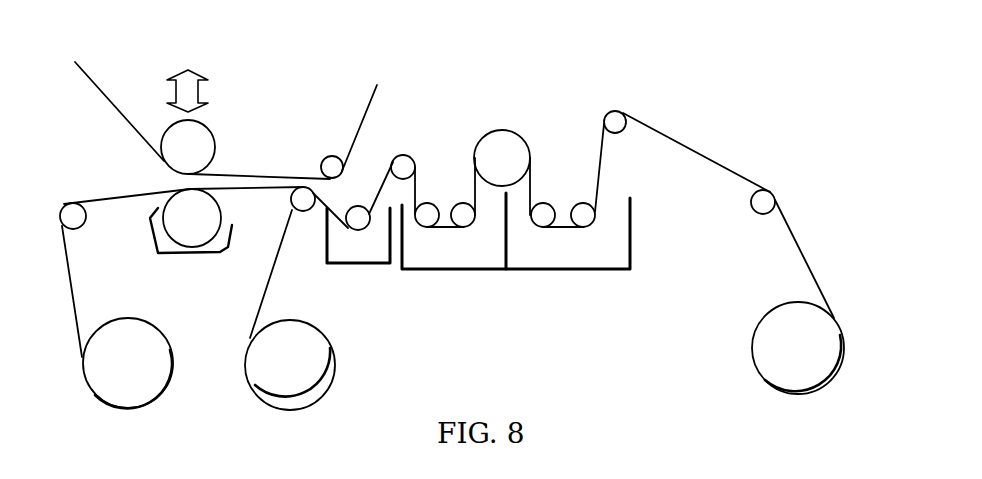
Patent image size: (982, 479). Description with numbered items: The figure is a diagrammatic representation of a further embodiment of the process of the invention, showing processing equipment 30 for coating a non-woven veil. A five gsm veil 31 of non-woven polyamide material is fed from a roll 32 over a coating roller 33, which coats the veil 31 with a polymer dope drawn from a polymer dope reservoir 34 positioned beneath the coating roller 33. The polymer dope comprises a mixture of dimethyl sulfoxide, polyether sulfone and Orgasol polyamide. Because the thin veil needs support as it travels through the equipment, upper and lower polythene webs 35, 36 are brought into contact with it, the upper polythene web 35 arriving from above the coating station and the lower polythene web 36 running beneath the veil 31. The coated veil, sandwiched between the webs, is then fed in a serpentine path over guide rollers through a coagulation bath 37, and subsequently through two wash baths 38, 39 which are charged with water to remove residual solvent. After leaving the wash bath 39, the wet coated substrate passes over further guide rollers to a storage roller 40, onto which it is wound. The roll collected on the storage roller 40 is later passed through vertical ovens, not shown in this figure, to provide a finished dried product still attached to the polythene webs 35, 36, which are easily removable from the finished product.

The processing equipment 30 is at (490, 120).
The veil 31 is at (68, 287).
The roll 32 is at (140, 382).
The coating roller 33 is at (212, 222).
The polymer dope reservoir 34 is at (220, 248).
The upper polythene web 35 is at (260, 173).
The lower polythene web 36 is at (263, 305).
The coagulation bath 37 is at (375, 248).
The wash bath 38 is at (465, 250).
The wash bath 39 is at (583, 250).
The storage roller 40 is at (798, 377).